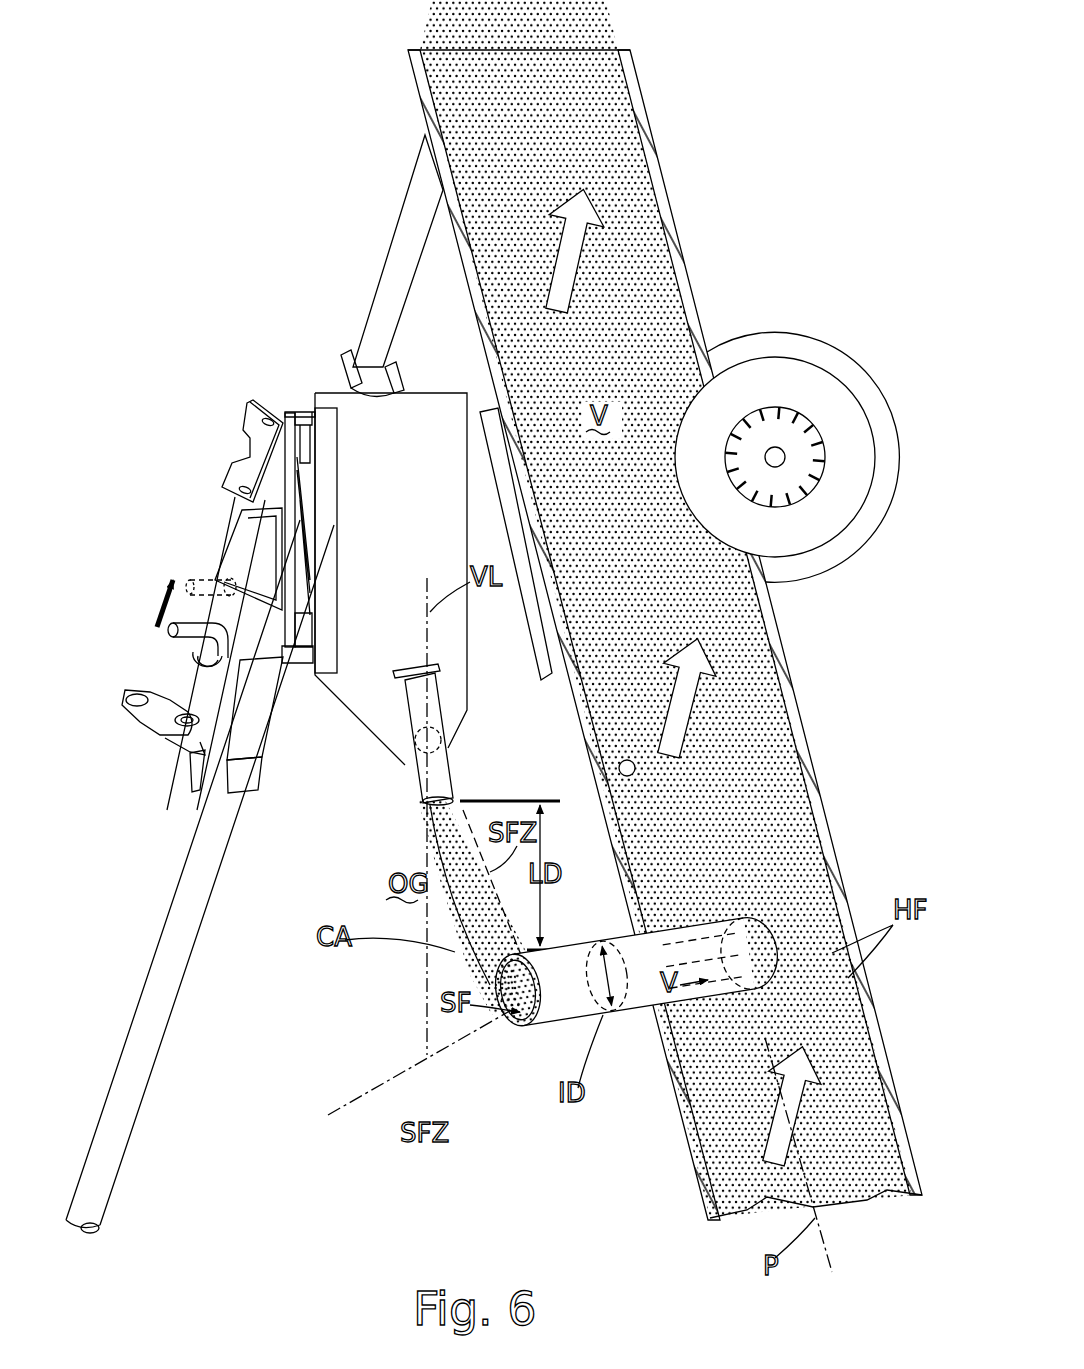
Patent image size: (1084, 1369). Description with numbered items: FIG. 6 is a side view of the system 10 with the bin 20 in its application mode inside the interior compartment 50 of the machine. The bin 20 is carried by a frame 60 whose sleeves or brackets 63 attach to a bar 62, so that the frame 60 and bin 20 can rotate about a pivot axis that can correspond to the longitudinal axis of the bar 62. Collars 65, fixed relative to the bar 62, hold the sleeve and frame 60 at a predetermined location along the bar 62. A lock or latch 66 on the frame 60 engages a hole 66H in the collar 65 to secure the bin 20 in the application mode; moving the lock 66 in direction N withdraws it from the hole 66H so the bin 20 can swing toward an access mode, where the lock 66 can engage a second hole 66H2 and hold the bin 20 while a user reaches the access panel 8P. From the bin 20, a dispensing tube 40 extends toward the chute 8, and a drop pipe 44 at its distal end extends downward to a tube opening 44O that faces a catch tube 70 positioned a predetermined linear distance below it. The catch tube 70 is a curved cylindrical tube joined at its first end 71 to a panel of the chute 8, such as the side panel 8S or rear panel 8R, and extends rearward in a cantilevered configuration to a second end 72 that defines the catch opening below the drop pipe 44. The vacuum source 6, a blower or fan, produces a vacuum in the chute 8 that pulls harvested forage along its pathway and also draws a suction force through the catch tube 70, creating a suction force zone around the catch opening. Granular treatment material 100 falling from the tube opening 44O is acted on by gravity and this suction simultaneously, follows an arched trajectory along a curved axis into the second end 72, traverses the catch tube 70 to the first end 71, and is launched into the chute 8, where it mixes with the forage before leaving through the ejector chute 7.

The system 10 is at (180, 160).
The ejector chute 7 is at (615, 610).
The chute 8 is at (860, 880).
The access panel 8P is at (500, 493).
The side panel 8S is at (905, 1130).
The rear panel 8R is at (690, 1170).
The vacuum source 6 is at (864, 412).
The bin 20 is at (418, 441).
The interior compartment 50 is at (189, 779).
The frame 60 is at (272, 527).
The bar 62 is at (400, 270).
The sleeves or brackets 63 is at (257, 783).
The collar 65 is at (195, 778).
The lock or latch 66 is at (172, 628).
The hole 66H is at (183, 762).
The second hole 66H2 is at (140, 700).
The dispensing tube 40 is at (401, 759).
The drop pipe 44 is at (433, 745).
The tube opening 44O is at (428, 807).
The granular treatment material 100 is at (620, 772).
The catch tube 70 is at (698, 1040).
The first end 71 is at (760, 1005).
The second end 72 is at (508, 1025).